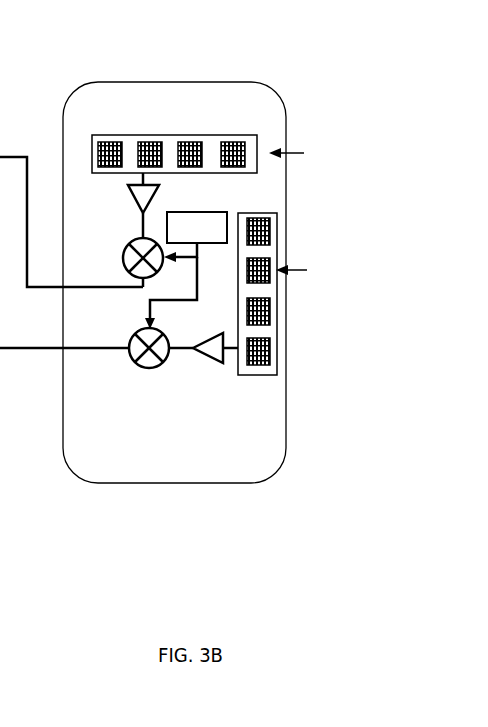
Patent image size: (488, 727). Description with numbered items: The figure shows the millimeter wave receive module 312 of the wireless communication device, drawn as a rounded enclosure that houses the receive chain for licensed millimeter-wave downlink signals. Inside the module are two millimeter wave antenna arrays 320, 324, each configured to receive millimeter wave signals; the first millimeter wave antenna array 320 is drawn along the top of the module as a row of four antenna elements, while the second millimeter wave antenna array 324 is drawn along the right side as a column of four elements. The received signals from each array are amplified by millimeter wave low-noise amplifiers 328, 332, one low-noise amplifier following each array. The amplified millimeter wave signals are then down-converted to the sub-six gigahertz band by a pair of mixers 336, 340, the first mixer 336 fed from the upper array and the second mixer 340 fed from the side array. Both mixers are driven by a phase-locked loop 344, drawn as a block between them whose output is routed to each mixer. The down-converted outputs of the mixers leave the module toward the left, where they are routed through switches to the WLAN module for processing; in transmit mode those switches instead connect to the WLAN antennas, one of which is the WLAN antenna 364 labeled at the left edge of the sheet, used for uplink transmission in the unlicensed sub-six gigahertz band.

The millimeter wave receive module 312 is at (208, 592).
The millimeter wave antenna array 320 is at (173, 132).
The millimeter wave antenna array 324 is at (277, 350).
The millimeter wave low-noise amplifier 328 is at (137, 202).
The millimeter wave low-noise amplifier 332 is at (213, 360).
The mixer 336 is at (127, 243).
The mixer 340 is at (160, 357).
The phase-locked loop 344 is at (227, 212).
The WLAN antenna 364 is at (64, 418).